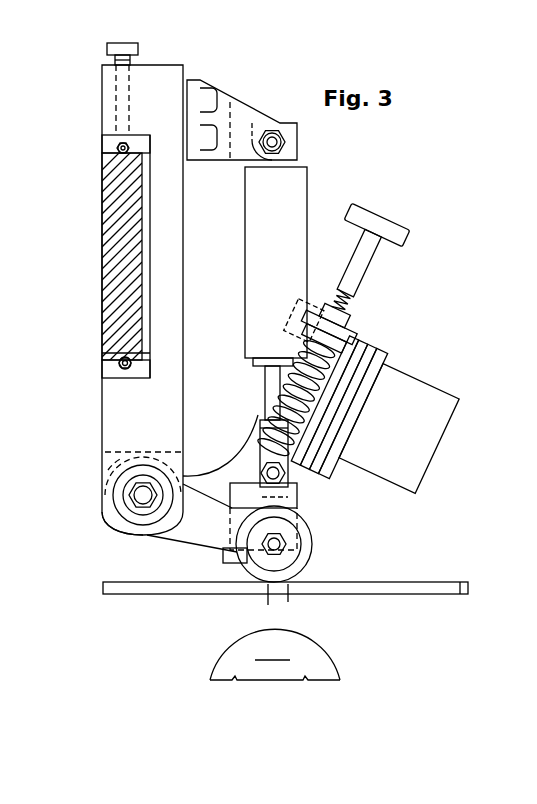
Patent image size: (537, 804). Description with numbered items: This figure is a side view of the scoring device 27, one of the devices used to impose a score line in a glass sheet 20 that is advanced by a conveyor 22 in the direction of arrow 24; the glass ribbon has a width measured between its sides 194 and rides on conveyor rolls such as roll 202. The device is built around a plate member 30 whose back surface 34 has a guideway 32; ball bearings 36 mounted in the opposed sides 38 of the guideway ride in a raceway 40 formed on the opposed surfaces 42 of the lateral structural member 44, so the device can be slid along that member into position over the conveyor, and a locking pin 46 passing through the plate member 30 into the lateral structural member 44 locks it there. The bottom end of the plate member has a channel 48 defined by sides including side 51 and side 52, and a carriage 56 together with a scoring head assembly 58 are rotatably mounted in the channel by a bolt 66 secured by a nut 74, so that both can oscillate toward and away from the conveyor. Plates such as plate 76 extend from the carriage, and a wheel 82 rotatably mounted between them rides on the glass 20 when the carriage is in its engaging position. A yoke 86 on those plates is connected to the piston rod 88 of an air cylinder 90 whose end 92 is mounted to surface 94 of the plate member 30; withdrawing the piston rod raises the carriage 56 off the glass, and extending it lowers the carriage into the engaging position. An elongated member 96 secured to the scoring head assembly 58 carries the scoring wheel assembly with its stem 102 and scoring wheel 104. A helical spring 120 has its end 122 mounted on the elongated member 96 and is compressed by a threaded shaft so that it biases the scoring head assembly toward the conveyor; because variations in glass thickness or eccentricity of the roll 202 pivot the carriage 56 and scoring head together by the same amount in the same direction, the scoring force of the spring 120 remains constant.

The glass sheet 20 is at (420, 575).
The conveyor 22 is at (359, 648).
The direction arrow 24 is at (118, 568).
The scoring device 27 is at (348, 157).
The plate member 30 is at (163, 55).
The guideway 32 is at (102, 355).
The back surface 34 is at (102, 418).
The ball bearings 36 is at (123, 146).
The opposed sides 38 is at (118, 152).
The raceway 40 is at (121, 155).
The opposed surfaces 42 is at (140, 150).
The lateral structural member 44 is at (99, 262).
The locking pin 46 is at (114, 48).
The channel 48 is at (103, 460).
The channel side 51 is at (122, 450).
The channel side 52 is at (108, 473).
The carriage 56 is at (187, 546).
The scoring head assembly 58 is at (210, 466).
The bolt 66 is at (136, 493).
The nut 74 is at (128, 510).
The plate 76 is at (163, 536).
The wheel 82 is at (306, 562).
The yoke 86 is at (295, 497).
The piston rod 88 is at (262, 377).
The air cylinder 90 is at (312, 198).
The cylinder end 92 is at (298, 131).
The plate surface 94 is at (183, 288).
The elongated member 96 is at (223, 558).
The stem 102 is at (283, 611).
The scoring wheel 104 is at (265, 603).
The helical spring 120 is at (297, 461).
The spring end 122 is at (246, 442).
The ribbon sides 194 is at (438, 588).
The conveyor roll 202 is at (272, 651).